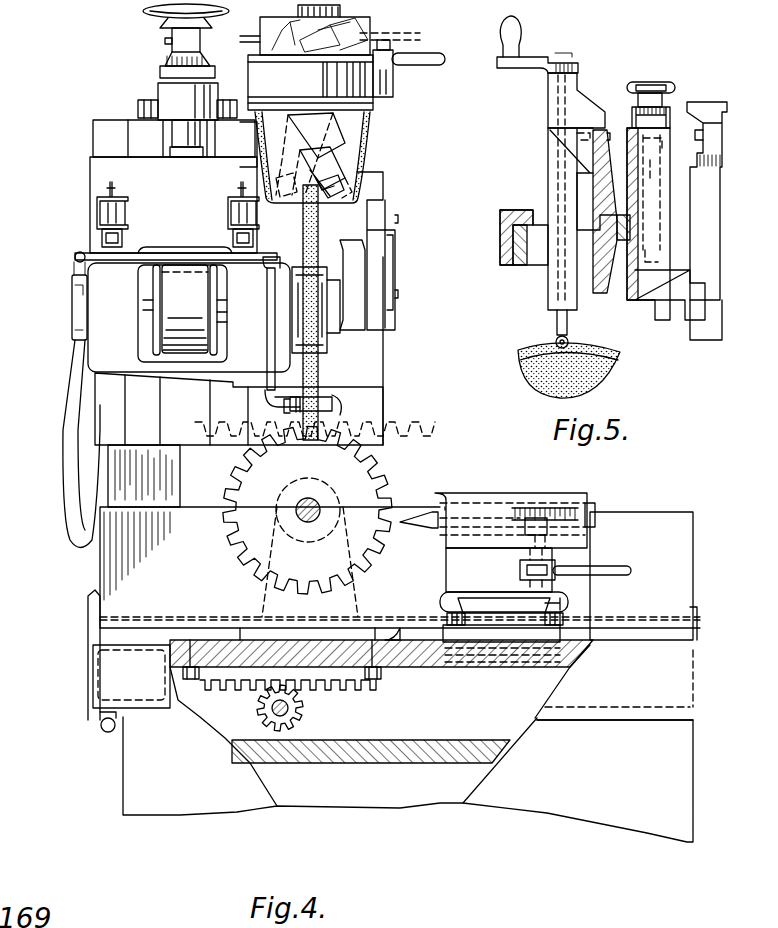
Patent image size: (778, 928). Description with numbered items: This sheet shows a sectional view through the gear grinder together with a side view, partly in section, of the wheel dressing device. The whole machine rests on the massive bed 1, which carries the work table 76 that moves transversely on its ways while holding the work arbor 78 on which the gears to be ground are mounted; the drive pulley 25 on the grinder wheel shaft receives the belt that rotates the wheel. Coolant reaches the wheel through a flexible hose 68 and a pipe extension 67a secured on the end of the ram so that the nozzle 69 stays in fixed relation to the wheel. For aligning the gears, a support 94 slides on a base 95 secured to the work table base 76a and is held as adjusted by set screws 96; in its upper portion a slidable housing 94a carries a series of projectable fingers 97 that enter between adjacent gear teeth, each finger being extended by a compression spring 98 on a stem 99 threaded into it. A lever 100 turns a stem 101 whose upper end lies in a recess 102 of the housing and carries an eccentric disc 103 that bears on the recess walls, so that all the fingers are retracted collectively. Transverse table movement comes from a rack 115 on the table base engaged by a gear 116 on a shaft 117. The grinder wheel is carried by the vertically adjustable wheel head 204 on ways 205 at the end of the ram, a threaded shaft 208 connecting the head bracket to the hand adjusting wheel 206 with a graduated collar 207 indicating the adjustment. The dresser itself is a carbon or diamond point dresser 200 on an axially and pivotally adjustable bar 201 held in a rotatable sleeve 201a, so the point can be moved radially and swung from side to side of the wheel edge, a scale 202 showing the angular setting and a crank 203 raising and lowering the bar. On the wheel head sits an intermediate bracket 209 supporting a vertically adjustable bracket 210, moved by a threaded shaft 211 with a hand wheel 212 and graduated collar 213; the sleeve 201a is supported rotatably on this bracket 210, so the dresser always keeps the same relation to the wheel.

In FIG. 4, the bed 1 is at (393, 743).
In FIG. 4, the drive pulley 25 is at (189, 317).
In FIG. 4, the pipe extension 67a is at (272, 325).
In FIG. 4, the flexible hose 68 is at (68, 430).
In FIG. 4, the nozzle 69 is at (345, 412).
In FIG. 4, the work table 76 is at (350, 606).
In FIG. 4, the work table base 76a is at (405, 640).
In FIG. 4, the work arbor 78 is at (320, 510).
In FIG. 4, the support 94 is at (499, 570).
In FIG. 4, the slidable housing 94a is at (505, 493).
In FIG. 4, the base 95 is at (503, 627).
In FIG. 4, the set screws 96 is at (575, 605).
In FIG. 4, the projectable fingers 97 is at (415, 508).
In FIG. 4, the compression springs 98 is at (545, 508).
In FIG. 4, the stems 99 is at (590, 503).
In FIG. 4, the lever 100 is at (615, 567).
In FIG. 4, the stem 101 is at (556, 568).
In FIG. 4, the recess 102 is at (525, 527).
In FIG. 4, the eccentric disc 103 is at (554, 527).
In FIG. 4, the rack 115 is at (385, 672).
In FIG. 4, the gear 116 is at (300, 710).
In FIG. 4, the shaft 117 is at (265, 706).
In FIG. 4, the point dresser 200 is at (342, 187).
In FIG. 5, the point dresser 200 is at (556, 343).
In FIG. 4, the adjustable bar 201 is at (330, 157).
In FIG. 5, the adjustable bar 201 is at (550, 294).
In FIG. 4, the rotatable sleeve 201a is at (395, 80).
In FIG. 5, the rotatable sleeve 201a is at (593, 183).
In FIG. 4, the scale 202 is at (360, 35).
In FIG. 5, the crank 203 is at (527, 57).
In FIG. 4, the wheel head 204 is at (174, 187).
In FIG. 5, the wheel head 204 is at (702, 318).
In FIG. 4, the ways 205 is at (215, 150).
In FIG. 4, the hand adjusting wheel 206 is at (163, 9).
In FIG. 4, the graduated collar 207 is at (166, 61).
In FIG. 4, the threaded shaft 208 is at (160, 135).
In FIG. 5, the intermediate bracket 209 is at (653, 322).
In FIG. 5, the vertically adjustable bracket 210 is at (630, 272).
In FIG. 5, the threaded shaft 211 is at (664, 243).
In FIG. 5, the hand wheel 212 is at (632, 83).
In FIG. 5, the graduated collar 213 is at (668, 112).